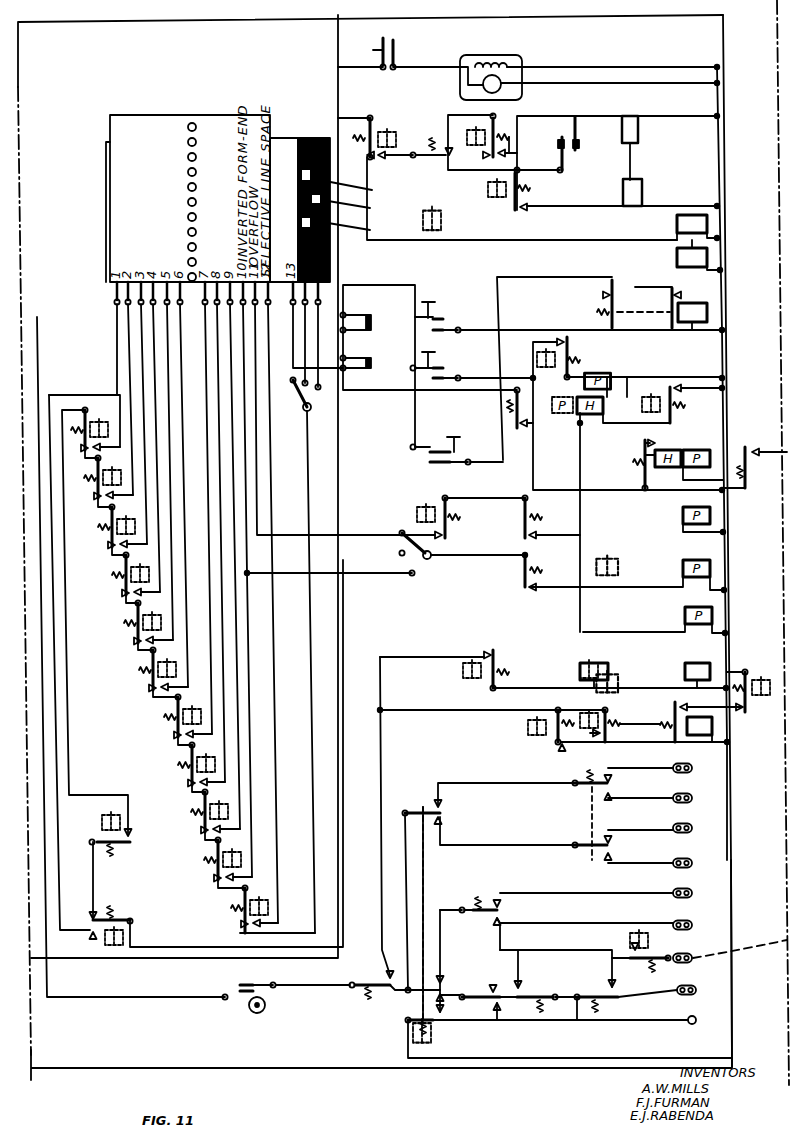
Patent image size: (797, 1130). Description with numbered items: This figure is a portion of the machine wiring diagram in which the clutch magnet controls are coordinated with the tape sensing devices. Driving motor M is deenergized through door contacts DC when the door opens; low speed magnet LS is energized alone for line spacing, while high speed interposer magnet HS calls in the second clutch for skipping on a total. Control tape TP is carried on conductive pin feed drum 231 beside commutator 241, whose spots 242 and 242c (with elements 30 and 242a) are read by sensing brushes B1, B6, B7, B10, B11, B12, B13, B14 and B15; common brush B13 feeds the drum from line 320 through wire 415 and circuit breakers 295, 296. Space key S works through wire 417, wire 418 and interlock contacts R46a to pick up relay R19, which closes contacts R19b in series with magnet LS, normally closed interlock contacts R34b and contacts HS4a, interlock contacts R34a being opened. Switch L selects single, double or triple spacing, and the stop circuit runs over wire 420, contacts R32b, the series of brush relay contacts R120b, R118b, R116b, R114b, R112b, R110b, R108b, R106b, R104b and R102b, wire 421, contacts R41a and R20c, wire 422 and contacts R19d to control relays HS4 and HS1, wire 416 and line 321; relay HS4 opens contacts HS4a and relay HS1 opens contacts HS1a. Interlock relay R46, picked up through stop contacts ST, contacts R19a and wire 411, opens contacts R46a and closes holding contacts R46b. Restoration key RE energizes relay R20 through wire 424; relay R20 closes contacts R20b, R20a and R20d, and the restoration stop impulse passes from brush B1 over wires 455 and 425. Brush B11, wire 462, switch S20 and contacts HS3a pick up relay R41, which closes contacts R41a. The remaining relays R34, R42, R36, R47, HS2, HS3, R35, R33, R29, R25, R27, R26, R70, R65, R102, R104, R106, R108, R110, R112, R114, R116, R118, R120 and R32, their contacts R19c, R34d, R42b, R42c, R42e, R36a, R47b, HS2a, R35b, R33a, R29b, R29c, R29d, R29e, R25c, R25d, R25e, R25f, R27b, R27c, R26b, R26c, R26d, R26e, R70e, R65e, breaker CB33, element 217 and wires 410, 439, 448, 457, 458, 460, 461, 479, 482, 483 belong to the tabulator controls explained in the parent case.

The line 320 is at (231, 19).
The wire 415 is at (338, 50).
The door contacts DC is at (390, 40).
The driving motor M is at (513, 55).
The switch 217 is at (566, 147).
The high speed interposer magnet HS is at (640, 128).
The low speed clutch magnet LS is at (634, 180).
The control relay HS4 is at (590, 670).
The relay contacts HS4a is at (525, 208).
The spacing control relay R19 is at (383, 130).
The relay contacts R19a is at (525, 426).
The relay contacts R19b is at (376, 156).
The relay contact R19c is at (368, 153).
The relay contacts R19d is at (490, 650).
The relay R34 is at (423, 172).
The interlock relay contacts R34a is at (447, 150).
The interlock relay contacts R34b is at (478, 170).
The relay contact R34d is at (443, 539).
The relay R42 is at (470, 130).
The relay contact R42b is at (487, 158).
The relay contact R42c is at (499, 154).
The relay contact R42e is at (634, 948).
The conductor 461 is at (440, 243).
The relay R36 is at (690, 215).
The relay contact R36a is at (745, 712).
The control tape TP is at (165, 127).
The tape 30 is at (196, 124).
The pin feed drum 231 is at (283, 137).
The commutator 241 is at (311, 137).
The commutator spot 242 is at (359, 208).
The sensing contact 242a is at (328, 268).
The commutator spot 242c is at (362, 210).
The first sensing brush B1 is at (114, 296).
The sensing brush B6 is at (182, 297).
The sensing brush B7 is at (206, 299).
The sensing brush B10 is at (240, 306).
The sensing brush B11 is at (256, 305).
The sensing brush B12 is at (268, 299).
The common brush B13 is at (293, 306).
The sensing brush B14 is at (308, 308).
The sensing brush B15 is at (320, 303).
The conductor 448 is at (38, 338).
The wire 455 is at (117, 346).
The wire 425 is at (80, 394).
The wire 421 is at (70, 737).
The spacing selection switch L is at (303, 408).
The wire 420 is at (308, 434).
The conductor 460 is at (206, 473).
The wire 462 is at (258, 497).
The conductor 482 is at (248, 521).
The conductor 483 is at (365, 573).
The conductor 439 is at (388, 390).
The wire 416 is at (731, 853).
The bus conductor 457 is at (729, 300).
The wire 417 is at (372, 287).
The wire 418 is at (508, 326).
The circuit breaker 295 is at (366, 320).
The circuit breaker 296 is at (366, 362).
The tape feed spacing key S is at (450, 326).
The tape restoration key RE is at (452, 374).
The stop key contacts ST is at (428, 453).
The interlock relay R46 is at (690, 303).
The interlock contacts R46a is at (609, 293).
The holding contacts R46b is at (673, 292).
The wire 424 is at (533, 478).
The wire 411 is at (580, 480).
The restoration relay R20 is at (119, 936).
The relay contacts R20a is at (650, 443).
The relay contacts R20b is at (600, 340).
The relay contacts R20c is at (98, 916).
The lower relay contacts R20d is at (91, 934).
The control relay HS1 is at (648, 397).
The relay contacts HS1a is at (676, 386).
The relay R47 is at (763, 478).
The relay contact R47b is at (752, 450).
The switch S20 is at (402, 531).
The relay HS2 is at (503, 508).
The relay contact HS2a is at (538, 537).
The relay HS3 is at (500, 580).
The relay contacts HS3a is at (536, 590).
The relay R41 is at (105, 813).
The relay contacts R41a is at (129, 836).
The wire 422 is at (380, 790).
The conductor 458 is at (422, 710).
The relay R35 is at (528, 731).
The relay contact R35b is at (560, 745).
The relay R33 is at (700, 717).
The relay contact R33a is at (678, 706).
The relay R29 is at (430, 787).
The relay contact R29b is at (437, 995).
The relay contact R29c is at (438, 980).
The relay contact R29d is at (442, 817).
The relay contact R29e is at (440, 806).
The relay R25 is at (583, 865).
The relay contact R25c is at (610, 841).
The relay contact R25d is at (612, 855).
The relay contact R25e is at (610, 780).
The relay contact R25f is at (612, 793).
The relay R27 is at (360, 973).
The relay contact R27b is at (393, 999).
The relay contact R27c is at (389, 972).
The relay R26 is at (470, 1062).
The relay contact R26b is at (497, 905).
The relay contact R26c is at (500, 918).
The relay contact R26d is at (498, 1006).
The relay contact R26e is at (492, 990).
The relay R70 is at (545, 968).
The relay contact R70e is at (518, 985).
The relay R65 is at (594, 968).
The relay contact R65e is at (616, 990).
The conductor 410 is at (562, 1058).
The conductor 479 is at (278, 795).
The line 321 is at (387, 1068).
The circuit breaker CB33 is at (240, 985).
The relay R102 is at (98, 430).
The brush relay contacts R102b is at (89, 451).
The relay R104 is at (111, 478).
The brush relay contacts R104b is at (101, 499).
The relay R106 is at (125, 527).
The brush relay contacts R106b is at (115, 548).
The relay R108 is at (139, 575).
The brush relay contacts R108b is at (129, 596).
The relay R110 is at (151, 622).
The brush relay contacts R110b is at (141, 644).
The relay R112 is at (166, 669).
The brush relay contacts R112b is at (156, 691).
The relay R114 is at (191, 717).
The brush relay contacts R114b is at (181, 738).
The relay R116 is at (205, 764).
The brush relay contacts R116b is at (195, 786).
The relay R118 is at (218, 812).
The brush relay contacts R118b is at (208, 833).
The relay R120 is at (231, 860).
The brush relay contacts R120b is at (221, 881).
The relay R32 is at (273, 906).
The relay contacts R32b is at (246, 928).